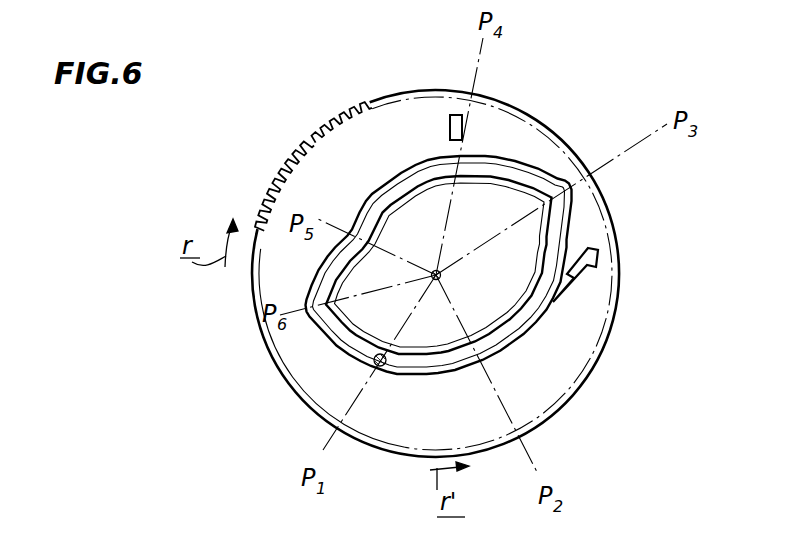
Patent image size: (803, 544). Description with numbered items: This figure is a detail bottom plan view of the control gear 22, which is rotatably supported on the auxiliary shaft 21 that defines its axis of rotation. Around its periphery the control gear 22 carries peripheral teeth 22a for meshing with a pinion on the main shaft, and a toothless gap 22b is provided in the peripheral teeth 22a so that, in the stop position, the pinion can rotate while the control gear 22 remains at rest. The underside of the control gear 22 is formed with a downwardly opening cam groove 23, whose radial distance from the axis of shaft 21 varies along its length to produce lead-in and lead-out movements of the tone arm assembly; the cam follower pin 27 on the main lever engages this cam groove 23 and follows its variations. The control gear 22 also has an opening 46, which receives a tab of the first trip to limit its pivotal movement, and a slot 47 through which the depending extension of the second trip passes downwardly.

The auxiliary shaft 21 is at (441, 277).
The control gear 22 is at (325, 400).
The peripheral teeth 22a is at (350, 111).
The gap 22b is at (314, 144).
The cam groove 23 is at (343, 342).
The cam follower pin 27 is at (386, 366).
The opening 46 is at (450, 128).
The slot 47 is at (596, 265).